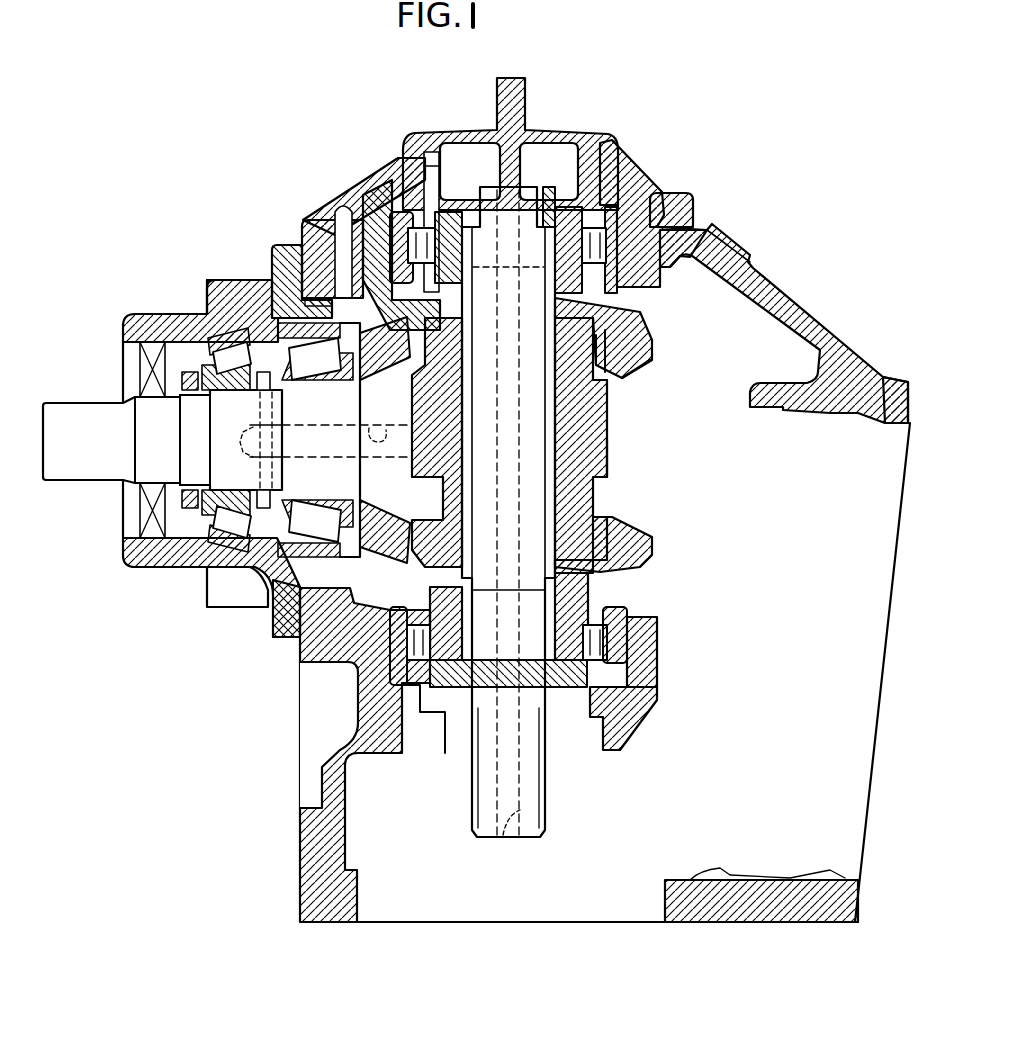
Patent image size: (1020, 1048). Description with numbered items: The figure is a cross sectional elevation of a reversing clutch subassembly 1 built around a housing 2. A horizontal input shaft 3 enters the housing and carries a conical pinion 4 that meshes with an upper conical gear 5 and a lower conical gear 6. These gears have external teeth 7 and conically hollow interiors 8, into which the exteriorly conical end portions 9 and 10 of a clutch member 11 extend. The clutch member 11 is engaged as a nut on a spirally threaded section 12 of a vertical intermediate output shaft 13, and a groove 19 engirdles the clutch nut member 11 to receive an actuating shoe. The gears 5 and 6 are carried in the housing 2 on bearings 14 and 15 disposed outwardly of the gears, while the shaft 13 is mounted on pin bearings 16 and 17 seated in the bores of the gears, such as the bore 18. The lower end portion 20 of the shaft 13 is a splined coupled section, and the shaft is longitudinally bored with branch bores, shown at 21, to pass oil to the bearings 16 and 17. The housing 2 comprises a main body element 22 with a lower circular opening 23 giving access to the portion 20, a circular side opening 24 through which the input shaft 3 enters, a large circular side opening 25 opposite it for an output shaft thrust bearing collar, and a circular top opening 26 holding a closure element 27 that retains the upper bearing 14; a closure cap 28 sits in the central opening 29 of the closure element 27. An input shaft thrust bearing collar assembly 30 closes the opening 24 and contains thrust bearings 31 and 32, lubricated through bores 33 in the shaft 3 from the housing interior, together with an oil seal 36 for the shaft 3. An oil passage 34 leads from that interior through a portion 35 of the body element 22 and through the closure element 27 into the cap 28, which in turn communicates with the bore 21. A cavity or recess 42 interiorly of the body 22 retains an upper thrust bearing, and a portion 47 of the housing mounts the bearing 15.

The reversing clutch subassembly 1 is at (300, 845).
The housing 2 is at (760, 285).
The horizontal input shaft 3 is at (70, 402).
The conical pinion 4 is at (403, 488).
The upper conical gear 5 is at (645, 322).
The lower conical gear 6 is at (645, 560).
The external teeth 7 is at (636, 370).
The conically hollow interiors 8 is at (596, 345).
The upper exteriorly conical end portion 9 is at (606, 352).
The lower exteriorly conical end portion 10 is at (590, 562).
The clutch member 11 is at (607, 462).
The spirally threaded section 12 is at (558, 490).
The vertical intermediate output shaft 13 is at (470, 715).
The upper bearing 14 is at (610, 262).
The lower bearing 15 is at (628, 620).
The upper pin bearing 16 is at (550, 227).
The lower pin bearing 17 is at (462, 665).
The bore 18 is at (470, 210).
The groove 19 is at (598, 440).
The lower end portion 20 is at (546, 787).
The bore 21 is at (504, 836).
The main body element 22 is at (805, 312).
The lower circular opening 23 is at (665, 920).
The circular side opening 24 is at (273, 615).
The large circular side opening 25 is at (855, 880).
The circular top opening 26 is at (662, 205).
The closure element 27 is at (648, 170).
The closure cap 28 is at (537, 128).
The central opening 29 is at (439, 180).
The input shaft thrust bearing collar assembly 30 is at (272, 252).
The thrust bearing 31 is at (228, 378).
The thrust bearing 32 is at (303, 375).
The bores 33 is at (383, 428).
The oil passage 34 is at (355, 195).
The portion of the housing body element 35 is at (305, 215).
The oil seal 36 is at (120, 345).
The cavity or recess 42 is at (592, 720).
The portion of the housing 47 is at (640, 700).